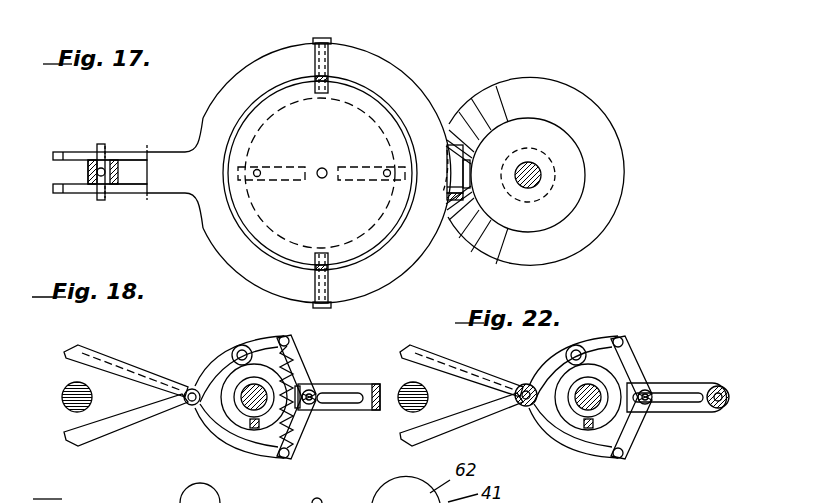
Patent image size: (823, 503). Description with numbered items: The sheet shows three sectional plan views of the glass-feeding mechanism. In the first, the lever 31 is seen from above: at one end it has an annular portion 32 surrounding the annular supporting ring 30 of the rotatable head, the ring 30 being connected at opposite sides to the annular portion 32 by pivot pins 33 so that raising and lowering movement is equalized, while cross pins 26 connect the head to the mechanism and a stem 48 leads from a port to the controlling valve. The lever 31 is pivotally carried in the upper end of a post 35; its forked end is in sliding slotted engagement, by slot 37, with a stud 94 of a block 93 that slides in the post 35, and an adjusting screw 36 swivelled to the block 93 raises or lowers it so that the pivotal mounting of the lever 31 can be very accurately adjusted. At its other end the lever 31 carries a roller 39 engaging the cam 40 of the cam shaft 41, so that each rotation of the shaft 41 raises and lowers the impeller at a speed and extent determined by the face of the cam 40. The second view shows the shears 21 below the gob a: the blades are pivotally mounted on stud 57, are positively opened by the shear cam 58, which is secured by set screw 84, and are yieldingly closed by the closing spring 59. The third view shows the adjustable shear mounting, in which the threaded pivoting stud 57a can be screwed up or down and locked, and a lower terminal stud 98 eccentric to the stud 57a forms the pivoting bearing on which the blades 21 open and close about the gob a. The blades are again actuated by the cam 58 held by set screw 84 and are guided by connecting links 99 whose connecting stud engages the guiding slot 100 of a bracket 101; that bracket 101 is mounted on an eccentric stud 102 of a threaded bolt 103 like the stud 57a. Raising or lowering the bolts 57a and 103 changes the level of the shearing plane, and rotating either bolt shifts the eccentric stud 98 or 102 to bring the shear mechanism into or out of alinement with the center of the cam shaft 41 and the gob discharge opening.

In FIG. 17, the annular portion 32 is at (392, 272).
In FIG. 17, the annular supporting ring 30 is at (366, 95).
In FIG. 17, the pins 33 is at (329, 40).
In FIG. 17, the stem 48 is at (323, 168).
In FIG. 17, the cross pins 26 is at (357, 176).
In FIG. 17, the lever 31 is at (175, 173).
In FIG. 17, the slot 37 is at (147, 152).
In FIG. 17, the adjusting screw 36 is at (107, 178).
In FIG. 17, the stud 94 is at (103, 143).
In FIG. 17, the block 93 is at (96, 178).
In FIG. 17, the post 35 is at (88, 172).
In FIG. 17, the cam 40 is at (603, 144).
In FIG. 17, the shaft 41 is at (540, 177).
In FIG. 18, the shaft 41 is at (262, 393).
In FIG. 22, the shaft 41 is at (597, 390).
In FIG. 17, the roller 39 is at (460, 158).
In FIG. 18, the gob a is at (62, 396).
In FIG. 22, the gob a is at (419, 392).
In FIG. 18, the shears 21 is at (118, 364).
In FIG. 22, the shears 21 is at (470, 377).
In FIG. 18, the stud 57 is at (192, 388).
In FIG. 22, the pivoting stud 57a is at (523, 383).
In FIG. 18, the shear cam 58 is at (240, 418).
In FIG. 22, the shear cam 58 is at (578, 416).
In FIG. 18, the set screw 84 is at (256, 430).
In FIG. 22, the set screw 84 is at (589, 430).
In FIG. 18, the closing spring 59 is at (288, 425).
In FIG. 22, the lower terminal stud 98 is at (528, 405).
In FIG. 22, the connecting links 99 is at (632, 362).
In FIG. 22, the guiding slot 100 is at (680, 397).
In FIG. 22, the bracket 101 is at (686, 386).
In FIG. 22, the stud 102 is at (722, 405).
In FIG. 22, the threaded stem or bolt 103 is at (717, 385).